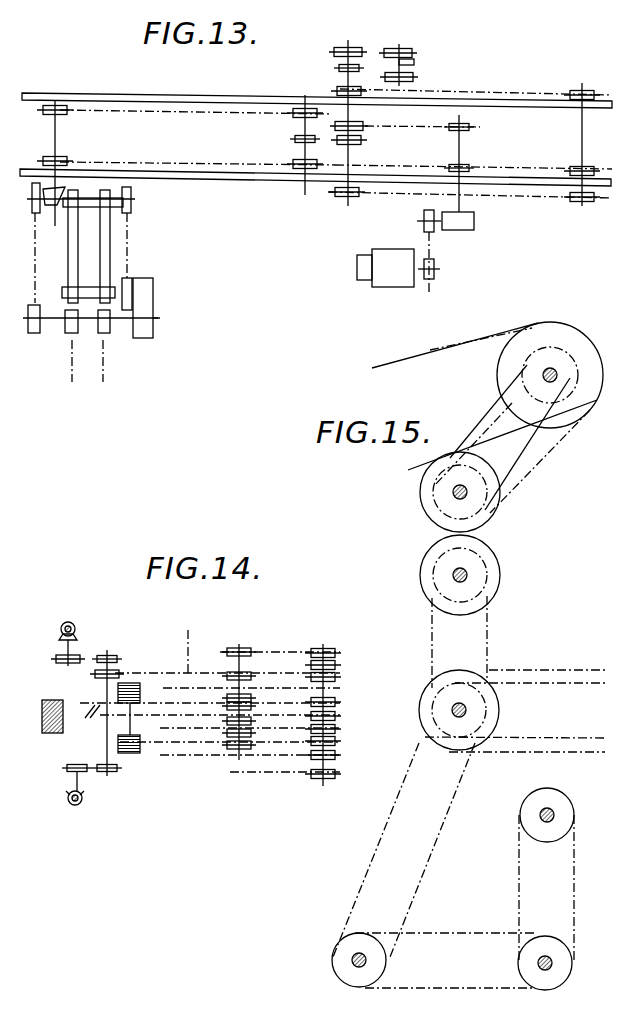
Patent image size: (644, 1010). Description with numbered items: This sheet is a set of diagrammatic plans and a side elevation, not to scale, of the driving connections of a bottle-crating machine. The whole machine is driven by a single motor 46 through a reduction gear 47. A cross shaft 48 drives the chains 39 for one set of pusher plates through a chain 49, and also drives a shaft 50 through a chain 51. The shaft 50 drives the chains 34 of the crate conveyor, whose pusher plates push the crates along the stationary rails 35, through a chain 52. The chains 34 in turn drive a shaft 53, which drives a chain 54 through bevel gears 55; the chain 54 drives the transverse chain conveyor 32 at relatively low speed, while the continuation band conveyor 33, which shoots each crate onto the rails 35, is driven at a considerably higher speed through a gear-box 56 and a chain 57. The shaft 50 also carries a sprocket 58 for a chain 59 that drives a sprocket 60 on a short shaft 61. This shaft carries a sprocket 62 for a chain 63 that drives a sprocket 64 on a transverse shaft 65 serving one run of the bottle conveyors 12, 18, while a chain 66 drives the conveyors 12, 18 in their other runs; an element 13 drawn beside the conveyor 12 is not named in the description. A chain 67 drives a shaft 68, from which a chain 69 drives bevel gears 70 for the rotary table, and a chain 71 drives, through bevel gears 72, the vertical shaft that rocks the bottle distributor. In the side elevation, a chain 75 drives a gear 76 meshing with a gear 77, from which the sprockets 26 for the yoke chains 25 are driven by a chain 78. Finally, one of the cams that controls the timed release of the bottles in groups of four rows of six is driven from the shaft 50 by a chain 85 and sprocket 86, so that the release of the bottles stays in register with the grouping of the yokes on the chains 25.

In FIG. 14, the bottle conveyor 12 is at (101, 720).
In FIG. 14, the stack 13 is at (64, 733).
In FIG. 15, the bottle conveyor 18 is at (549, 670).
In FIG. 14, the bottle conveyor 18 is at (156, 690).
In FIG. 15, the yoke chains 25 is at (479, 340).
In FIG. 15, the sprockets 26 is at (570, 323).
In FIG. 13, the transverse chain conveyor 32 is at (103, 378).
In FIG. 13, the continuation band conveyor 33 is at (105, 228).
In FIG. 13, the chain conveyor 34 is at (243, 160).
In FIG. 13, the stationary rails 35 is at (157, 97).
In FIG. 13, the chains 39 is at (482, 90).
In FIG. 13, the motor 46 is at (399, 275).
In FIG. 13, the reduction gear 47 is at (462, 230).
In FIG. 13, the cross shaft 48 is at (472, 163).
In FIG. 13, the chain 49 is at (509, 167).
In FIG. 13, the shaft 50 is at (347, 160).
In FIG. 13, the chain 51 is at (382, 126).
In FIG. 13, the chain 52 is at (334, 193).
In FIG. 13, the shaft 53 is at (58, 136).
In FIG. 13, the chain 54 is at (37, 249).
In FIG. 13, the bevel gears 55 is at (43, 214).
In FIG. 13, the gear-box 56 is at (143, 307).
In FIG. 13, the chain 57 is at (127, 258).
In FIG. 13, the sprocket 58 is at (338, 48).
In FIG. 15, the sprocket 58 is at (552, 937).
In FIG. 13, the chain 59 is at (370, 52).
In FIG. 15, the chain 59 is at (454, 933).
In FIG. 13, the sprocket 60 is at (402, 50).
In FIG. 15, the sprocket 60 is at (320, 960).
In FIG. 13, the short shaft 61 is at (415, 63).
In FIG. 15, the short shaft 61 is at (350, 963).
In FIG. 13, the sprocket 62 is at (413, 78).
In FIG. 15, the sprocket 62 is at (333, 951).
In FIG. 15, the chain 63 is at (373, 850).
In FIG. 15, the sprocket 64 is at (425, 737).
In FIG. 14, the sprocket 64 is at (330, 664).
In FIG. 15, the transverse shaft 65 is at (454, 708).
In FIG. 14, the transverse shaft 65 is at (331, 678).
In FIG. 15, the chain 66 is at (499, 683).
In FIG. 14, the chain 66 is at (277, 650).
In FIG. 14, the chain 67 is at (227, 641).
In FIG. 14, the shaft 68 is at (105, 693).
In FIG. 14, the chain 69 is at (88, 657).
In FIG. 14, the bevel gears 70 is at (74, 636).
In FIG. 14, the chain 71 is at (93, 774).
In FIG. 14, the bevel gears 72 is at (68, 801).
In FIG. 15, the chain 75 is at (489, 620).
In FIG. 15, the gear 76 is at (502, 570).
In FIG. 15, the gear 77 is at (500, 505).
In FIG. 15, the chain 78 is at (517, 467).
In FIG. 15, the chain 85 is at (519, 878).
In FIG. 15, the sprocket 86 is at (522, 803).